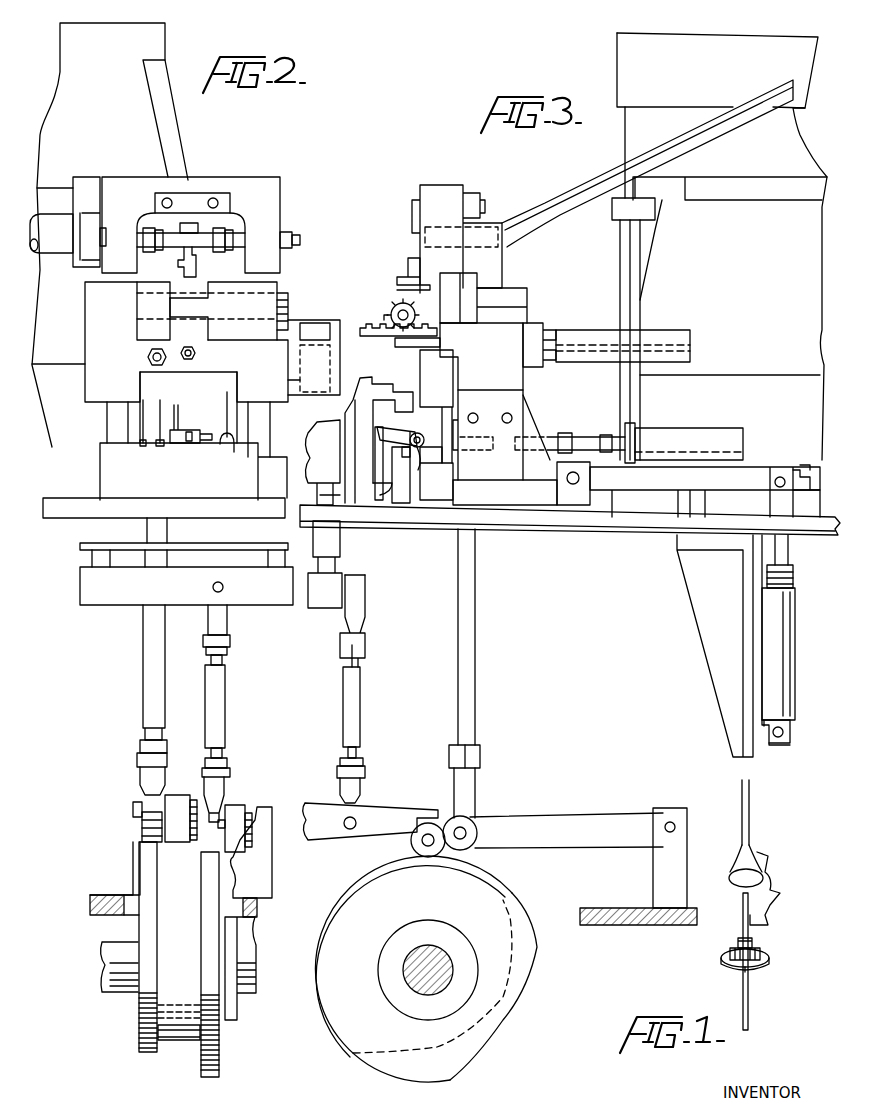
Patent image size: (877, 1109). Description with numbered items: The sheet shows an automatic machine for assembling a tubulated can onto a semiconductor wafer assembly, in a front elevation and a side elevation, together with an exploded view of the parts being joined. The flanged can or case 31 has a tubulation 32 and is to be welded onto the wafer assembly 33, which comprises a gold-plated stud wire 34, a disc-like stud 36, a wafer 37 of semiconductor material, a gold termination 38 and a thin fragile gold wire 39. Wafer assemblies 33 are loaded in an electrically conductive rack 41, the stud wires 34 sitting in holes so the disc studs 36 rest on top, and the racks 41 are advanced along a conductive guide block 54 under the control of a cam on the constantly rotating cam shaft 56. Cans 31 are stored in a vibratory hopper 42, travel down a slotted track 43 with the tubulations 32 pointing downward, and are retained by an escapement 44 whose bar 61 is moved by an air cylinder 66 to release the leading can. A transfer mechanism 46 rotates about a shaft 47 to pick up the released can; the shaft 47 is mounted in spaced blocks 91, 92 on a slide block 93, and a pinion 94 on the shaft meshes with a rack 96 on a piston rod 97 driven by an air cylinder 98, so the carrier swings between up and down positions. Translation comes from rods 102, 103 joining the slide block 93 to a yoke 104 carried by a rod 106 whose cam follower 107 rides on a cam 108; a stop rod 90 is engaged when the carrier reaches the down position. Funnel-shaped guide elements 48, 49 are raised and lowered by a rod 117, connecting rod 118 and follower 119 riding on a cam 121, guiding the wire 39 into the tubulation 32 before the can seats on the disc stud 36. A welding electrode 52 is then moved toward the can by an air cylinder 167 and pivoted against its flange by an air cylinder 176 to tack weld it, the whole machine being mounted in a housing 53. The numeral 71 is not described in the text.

In FIG. 2, the flanged can 31 is at (221, 447).
In FIG. 1, the flanged can 31 is at (755, 850).
In FIG. 2, the tubulation 32 is at (229, 396).
In FIG. 1, the tubulation 32 is at (750, 820).
In FIG. 1, the wafer assembly 33 is at (726, 980).
In FIG. 1, the stud wire 34 is at (750, 998).
In FIG. 1, the disc stud 36 is at (730, 960).
In FIG. 1, the wafer 37 is at (762, 957).
In FIG. 1, the gold termination 38 is at (753, 943).
In FIG. 2, the gold wire 39 is at (143, 438).
In FIG. 1, the gold wire 39 is at (779, 888).
In FIG. 3, the rack 41 is at (390, 483).
In FIG. 2, the vibratory hopper 42 is at (158, 40).
In FIG. 2, the track 43 is at (172, 128).
In FIG. 3, the track 43 is at (557, 208).
In FIG. 2, the escapement 44 is at (216, 232).
In FIG. 2, the transfer mechanism 46 is at (197, 277).
In FIG. 2, the shaft 47 is at (194, 308).
In FIG. 3, the shaft 47 is at (408, 312).
In FIG. 3, the guide element 48 is at (392, 384).
In FIG. 3, the guide element 49 is at (404, 404).
In FIG. 2, the welding electrode 52 is at (204, 423).
In FIG. 3, the welding electrode 52 is at (404, 456).
In FIG. 3, the housing 53 is at (551, 521).
In FIG. 3, the guide block 54 is at (403, 500).
In FIG. 2, the cam shaft 56 is at (123, 963).
In FIG. 3, the cam shaft 56 is at (407, 977).
In FIG. 2, the bar 61 is at (175, 227).
In FIG. 2, the air cylinder 66 is at (55, 262).
In FIG. 3, the post 71 is at (410, 270).
In FIG. 2, the stop rod 90 is at (160, 438).
In FIG. 2, the block 91 is at (140, 323).
In FIG. 3, the block 92 is at (398, 295).
In FIG. 2, the slide block 93 is at (103, 375).
In FIG. 3, the slide block 93 is at (443, 366).
In FIG. 2, the pinion 94 is at (288, 292).
In FIG. 3, the pinion 94 is at (394, 302).
In FIG. 2, the rack 96 is at (273, 326).
In FIG. 3, the rack 96 is at (376, 328).
In FIG. 3, the piston rod 97 is at (532, 328).
In FIG. 3, the air cylinder 98 is at (655, 332).
In FIG. 2, the rod 102 is at (258, 475).
In FIG. 2, the rod 103 is at (118, 412).
In FIG. 2, the yoke 104 is at (88, 584).
In FIG. 3, the yoke 104 is at (318, 588).
In FIG. 2, the rod 106 is at (240, 705).
In FIG. 3, the rod 106 is at (348, 685).
In FIG. 2, the cam follower 107 is at (237, 808).
In FIG. 3, the cam follower 107 is at (418, 858).
In FIG. 2, the cam 108 is at (203, 1048).
In FIG. 3, the cam 108 is at (490, 903).
In FIG. 2, the rod 117 is at (152, 522).
In FIG. 3, the rod 117 is at (328, 497).
In FIG. 2, the connecting rod 118 is at (155, 642).
In FIG. 3, the connecting rod 118 is at (472, 655).
In FIG. 2, the follower 119 is at (150, 822).
In FIG. 3, the follower 119 is at (471, 818).
In FIG. 2, the cam 121 is at (139, 1018).
In FIG. 3, the cam 121 is at (318, 1010).
In FIG. 3, the air cylinder 167 is at (672, 438).
In FIG. 3, the air cylinder 176 is at (788, 620).